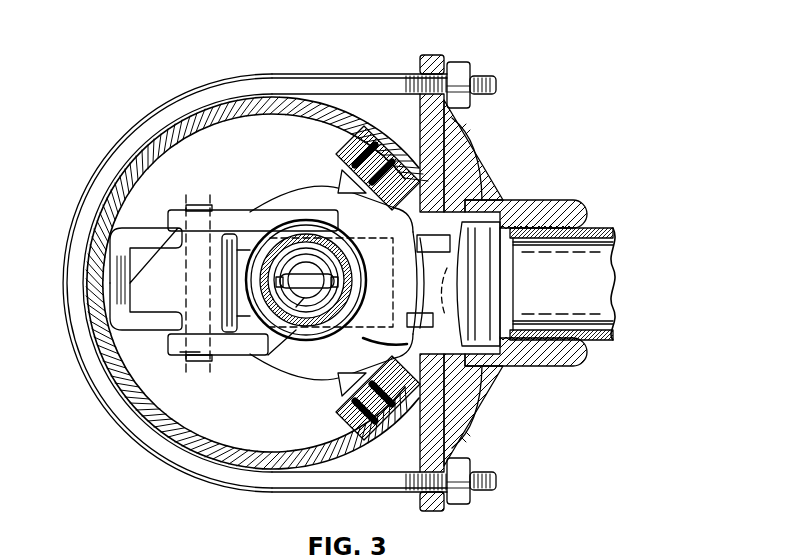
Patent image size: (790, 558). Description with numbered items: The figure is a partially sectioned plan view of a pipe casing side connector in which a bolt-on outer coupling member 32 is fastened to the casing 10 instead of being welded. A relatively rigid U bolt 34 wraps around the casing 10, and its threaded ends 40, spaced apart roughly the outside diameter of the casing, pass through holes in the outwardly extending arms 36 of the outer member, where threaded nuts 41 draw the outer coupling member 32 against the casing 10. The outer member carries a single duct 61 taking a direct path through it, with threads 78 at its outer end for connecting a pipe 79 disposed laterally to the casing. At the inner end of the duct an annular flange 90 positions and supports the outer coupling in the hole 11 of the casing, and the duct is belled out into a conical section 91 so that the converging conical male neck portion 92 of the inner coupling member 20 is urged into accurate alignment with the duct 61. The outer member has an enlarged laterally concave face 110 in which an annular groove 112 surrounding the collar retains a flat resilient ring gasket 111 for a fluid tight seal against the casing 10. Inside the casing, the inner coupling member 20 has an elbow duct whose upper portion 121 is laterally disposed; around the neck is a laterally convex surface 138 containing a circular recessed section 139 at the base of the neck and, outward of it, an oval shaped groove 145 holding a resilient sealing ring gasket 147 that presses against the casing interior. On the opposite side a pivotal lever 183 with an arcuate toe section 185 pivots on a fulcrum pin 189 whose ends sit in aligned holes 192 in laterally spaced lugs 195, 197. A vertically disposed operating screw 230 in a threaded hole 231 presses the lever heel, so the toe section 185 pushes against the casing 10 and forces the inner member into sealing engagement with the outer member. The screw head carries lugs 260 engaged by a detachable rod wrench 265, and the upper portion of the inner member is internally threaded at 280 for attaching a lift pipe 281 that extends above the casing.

The casing 10 is at (188, 438).
The hole 11 is at (432, 342).
The inner coupling member 20 is at (238, 196).
The bolt-on outer coupling member 32 is at (548, 207).
The U bolt 34 is at (315, 75).
The outwardly extending arms 36 is at (430, 55).
The threaded ends 40 is at (497, 88).
The threaded nuts 41 is at (461, 68).
The duct 61 is at (465, 304).
The threads 78 is at (552, 338).
The pipe 79 is at (591, 228).
The flange 90 is at (393, 345).
The conical section 91 is at (488, 188).
The conical male neck portion 92 is at (455, 264).
The laterally concave face 110 is at (454, 280).
The flat resilient ring gasket 111 is at (476, 153).
The annular groove 112 is at (467, 141).
The upper portion of elbow duct 121 is at (433, 244).
The laterally convex surface 138 is at (359, 131).
The recessed section 139 is at (381, 210).
The oval shaped groove 145 is at (349, 167).
The resilient sealing ring gasket 147 is at (352, 148).
The pivotal lever 183 is at (139, 238).
The arcuate toe section 185 is at (146, 324).
The fulcrum pin 189 is at (194, 360).
The aligned holes 192 is at (210, 190).
The lug 195 is at (178, 212).
The lug 197 is at (180, 354).
The operating screw 230 is at (283, 244).
The threaded hole 231 is at (308, 264).
The lugs 260 is at (280, 285).
The rod wrench 265 is at (296, 307).
The internal threads 280 is at (596, 557).
The lift pipe 281 is at (276, 346).